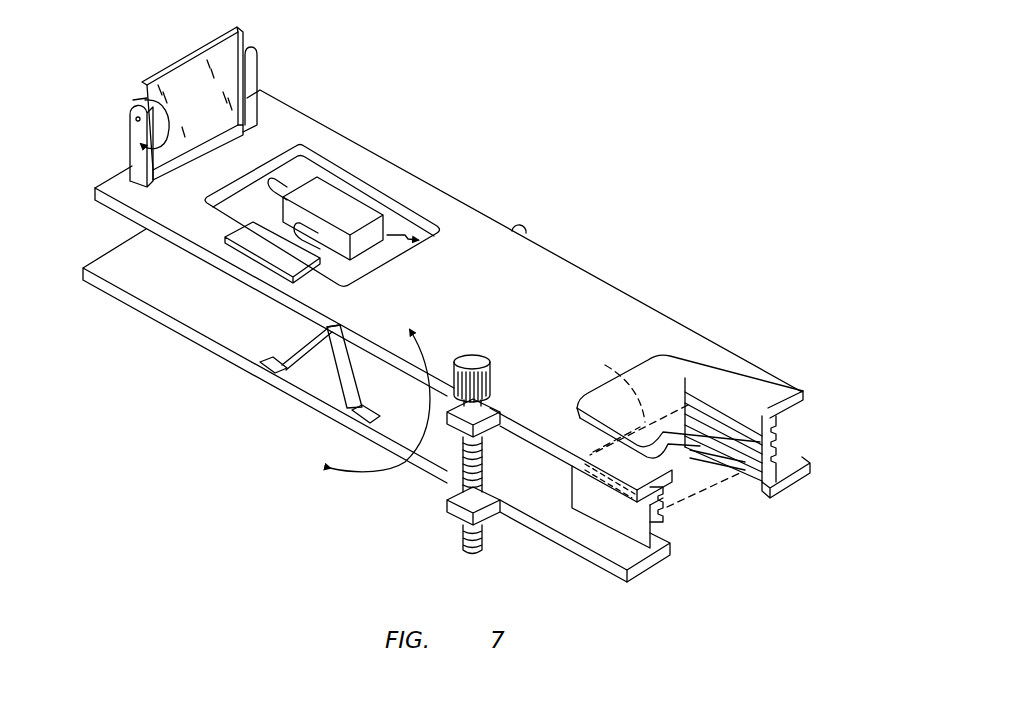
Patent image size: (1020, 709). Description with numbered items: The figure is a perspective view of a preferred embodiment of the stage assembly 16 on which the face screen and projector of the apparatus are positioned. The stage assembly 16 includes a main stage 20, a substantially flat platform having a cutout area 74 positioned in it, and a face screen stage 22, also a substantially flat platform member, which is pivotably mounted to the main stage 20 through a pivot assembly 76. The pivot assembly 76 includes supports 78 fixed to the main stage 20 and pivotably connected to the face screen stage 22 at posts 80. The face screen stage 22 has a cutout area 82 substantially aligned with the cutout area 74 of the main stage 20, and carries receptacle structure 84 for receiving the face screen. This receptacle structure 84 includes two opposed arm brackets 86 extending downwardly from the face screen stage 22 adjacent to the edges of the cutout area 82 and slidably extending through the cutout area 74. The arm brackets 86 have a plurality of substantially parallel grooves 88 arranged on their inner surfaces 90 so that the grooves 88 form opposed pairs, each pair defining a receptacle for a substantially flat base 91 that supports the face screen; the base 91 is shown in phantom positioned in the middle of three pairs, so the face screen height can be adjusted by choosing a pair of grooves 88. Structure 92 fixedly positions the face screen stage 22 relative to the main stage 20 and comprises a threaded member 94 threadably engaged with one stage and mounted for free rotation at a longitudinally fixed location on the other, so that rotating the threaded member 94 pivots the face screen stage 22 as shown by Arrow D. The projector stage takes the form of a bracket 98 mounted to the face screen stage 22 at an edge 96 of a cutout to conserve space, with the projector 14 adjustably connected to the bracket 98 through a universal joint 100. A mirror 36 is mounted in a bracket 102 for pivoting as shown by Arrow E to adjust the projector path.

The stage assembly 16 is at (490, 118).
The face screen stage 22 is at (362, 155).
The main stage 20 is at (228, 344).
The bracket 102 is at (137, 154).
The mirror 36 is at (192, 60).
The Arrow E is at (172, 125).
The edge of a cutout 96 is at (326, 170).
The projector 14 is at (312, 186).
The universal joint 100 is at (300, 240).
The bracket 98 is at (243, 238).
The posts 80 is at (516, 222).
The supports 78 is at (527, 228).
The pivot assembly 76 is at (296, 331).
The Arrow D is at (422, 348).
The structure for fixedly positioning 92 is at (506, 365).
The threaded member 94 is at (480, 473).
The base 91 is at (614, 374).
The inner surfaces 90 is at (742, 400).
The receptacle structure 84 is at (803, 398).
The grooves 88 is at (769, 438).
The arm brackets 86 is at (810, 472).
The cutout area 82 is at (695, 476).
The cutout area 74 is at (668, 546).